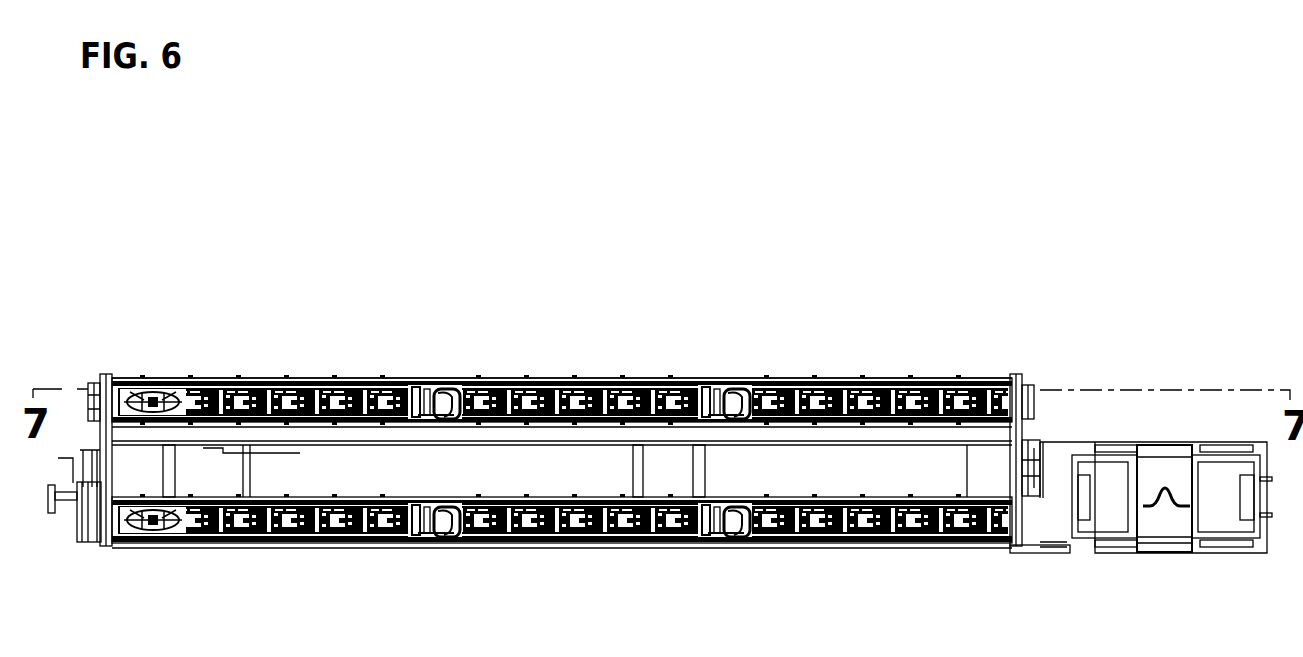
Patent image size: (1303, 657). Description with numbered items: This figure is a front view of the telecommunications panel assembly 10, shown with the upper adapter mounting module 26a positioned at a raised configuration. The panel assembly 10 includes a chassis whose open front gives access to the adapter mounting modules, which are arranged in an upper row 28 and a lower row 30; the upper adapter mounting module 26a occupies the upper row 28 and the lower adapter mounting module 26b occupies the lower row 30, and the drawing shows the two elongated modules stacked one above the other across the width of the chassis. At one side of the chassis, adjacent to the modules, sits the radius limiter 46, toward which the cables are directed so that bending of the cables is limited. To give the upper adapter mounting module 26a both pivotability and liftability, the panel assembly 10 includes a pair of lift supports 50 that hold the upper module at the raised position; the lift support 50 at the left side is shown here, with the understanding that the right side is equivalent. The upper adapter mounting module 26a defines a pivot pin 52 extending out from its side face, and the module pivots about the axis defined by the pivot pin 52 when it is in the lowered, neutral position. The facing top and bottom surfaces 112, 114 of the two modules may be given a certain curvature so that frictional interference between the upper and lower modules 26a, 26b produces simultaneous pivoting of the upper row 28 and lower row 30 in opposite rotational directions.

The telecommunications panel assembly 10 is at (692, 305).
The upper adapter mounting module 26a is at (513, 378).
The lower adapter mounting module 26b is at (527, 547).
The upper row 28 is at (973, 365).
The lower row 30 is at (981, 566).
The radius limiter 46 is at (1162, 535).
The lift support 50 is at (100, 433).
The pivot pin 52 is at (90, 404).
The top surface 112 is at (472, 497).
The bottom surface 114 is at (476, 428).